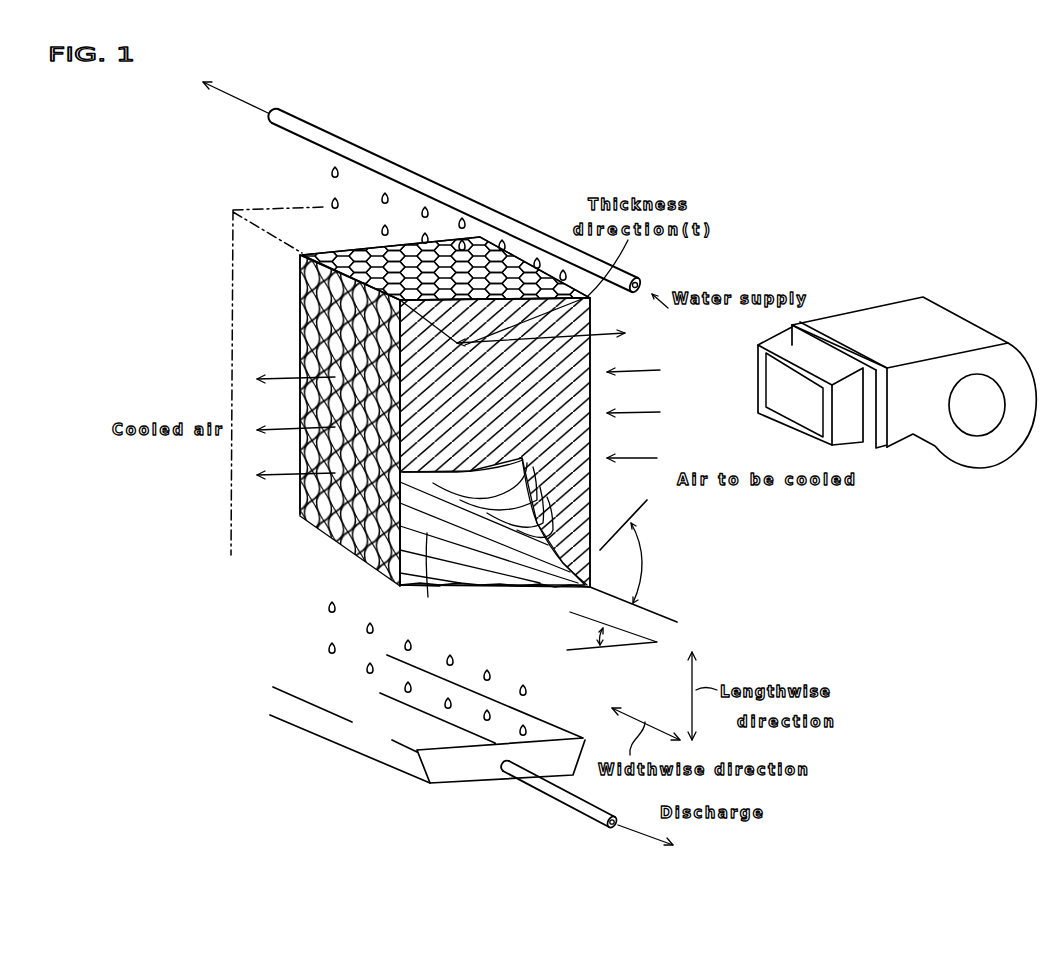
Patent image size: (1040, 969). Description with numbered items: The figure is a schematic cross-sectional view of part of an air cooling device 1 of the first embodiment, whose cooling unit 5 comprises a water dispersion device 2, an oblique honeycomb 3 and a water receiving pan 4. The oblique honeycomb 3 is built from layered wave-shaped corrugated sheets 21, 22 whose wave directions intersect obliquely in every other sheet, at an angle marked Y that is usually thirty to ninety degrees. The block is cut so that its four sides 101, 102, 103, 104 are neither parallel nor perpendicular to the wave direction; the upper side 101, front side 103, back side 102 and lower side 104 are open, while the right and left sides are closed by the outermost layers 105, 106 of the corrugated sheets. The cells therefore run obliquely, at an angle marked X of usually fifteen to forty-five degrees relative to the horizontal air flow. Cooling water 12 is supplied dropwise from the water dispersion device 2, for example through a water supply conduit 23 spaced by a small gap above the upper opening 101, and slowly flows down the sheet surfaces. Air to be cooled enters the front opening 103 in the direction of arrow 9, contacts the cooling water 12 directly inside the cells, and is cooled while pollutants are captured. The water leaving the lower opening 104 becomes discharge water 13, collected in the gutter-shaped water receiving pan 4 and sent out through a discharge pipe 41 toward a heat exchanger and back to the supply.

The air cooling device 1 is at (552, 145).
The water dispersion device 2 is at (422, 184).
The water supply conduit 23 is at (390, 161).
The oblique honeycomb 3 is at (290, 517).
The water receiving pan 4 is at (458, 788).
The discharge pipe 41 is at (533, 793).
The cooling unit 5 is at (575, 195).
The arrow 9 is at (647, 460).
The cooling water 12 is at (333, 166).
The discharge water 13 is at (330, 610).
The corrugated sheet 21 is at (403, 532).
The corrugated sheet 22 is at (537, 540).
The upper side 101 is at (457, 250).
The back side 102 is at (335, 340).
The front side 103 is at (590, 398).
The lower side 104 is at (413, 588).
The outermost layer 105 is at (553, 435).
The outermost layer 106 is at (262, 208).